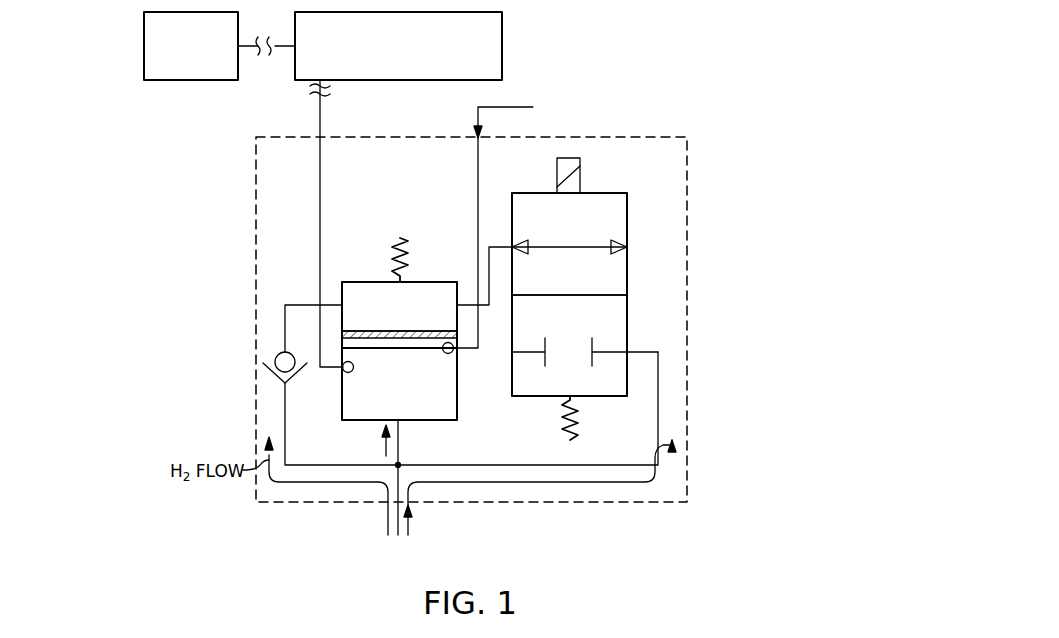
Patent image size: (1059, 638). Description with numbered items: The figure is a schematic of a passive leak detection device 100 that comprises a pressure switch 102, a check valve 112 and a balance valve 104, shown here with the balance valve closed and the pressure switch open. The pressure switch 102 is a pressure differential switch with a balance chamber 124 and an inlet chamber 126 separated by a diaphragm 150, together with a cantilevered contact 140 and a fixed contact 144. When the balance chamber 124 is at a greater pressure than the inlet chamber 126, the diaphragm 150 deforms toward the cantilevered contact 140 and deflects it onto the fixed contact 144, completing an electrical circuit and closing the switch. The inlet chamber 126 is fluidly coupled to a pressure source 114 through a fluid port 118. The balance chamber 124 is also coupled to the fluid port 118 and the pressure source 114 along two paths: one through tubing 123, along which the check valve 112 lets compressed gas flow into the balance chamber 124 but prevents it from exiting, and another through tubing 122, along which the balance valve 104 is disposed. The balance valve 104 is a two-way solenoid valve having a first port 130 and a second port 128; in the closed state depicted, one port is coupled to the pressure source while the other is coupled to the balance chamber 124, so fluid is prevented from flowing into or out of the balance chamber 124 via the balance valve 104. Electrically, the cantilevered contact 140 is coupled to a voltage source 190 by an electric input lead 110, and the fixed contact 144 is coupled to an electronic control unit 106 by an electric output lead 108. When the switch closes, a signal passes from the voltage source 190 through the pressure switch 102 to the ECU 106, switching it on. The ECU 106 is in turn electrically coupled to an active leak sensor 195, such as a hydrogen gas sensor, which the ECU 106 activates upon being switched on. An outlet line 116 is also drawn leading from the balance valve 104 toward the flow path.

The passive leak detection device 100 is at (648, 72).
The pressure switch 102 is at (371, 282).
The balance valve 104 is at (627, 209).
The electronic control unit (ECU) 106 is at (502, 46).
The electric output lead 108 is at (320, 122).
The electric input lead 110 is at (476, 119).
The check valve 112 is at (273, 353).
The pressure source 114 is at (325, 551).
The outlet line 116 is at (658, 400).
The fluid port 118 is at (399, 438).
The tubing 122 is at (548, 465).
The tubing 123 is at (285, 414).
The balance chamber 124 is at (399, 306).
The inlet chamber 126 is at (399, 384).
The second port 128 is at (569, 367).
The first port 130 is at (569, 244).
The cantilevered contact 140 is at (453, 352).
The fixed contact 144 is at (343, 374).
The diaphragm 150 is at (428, 330).
The voltage source 190 is at (685, 107).
The active leak sensor 195 is at (144, 46).